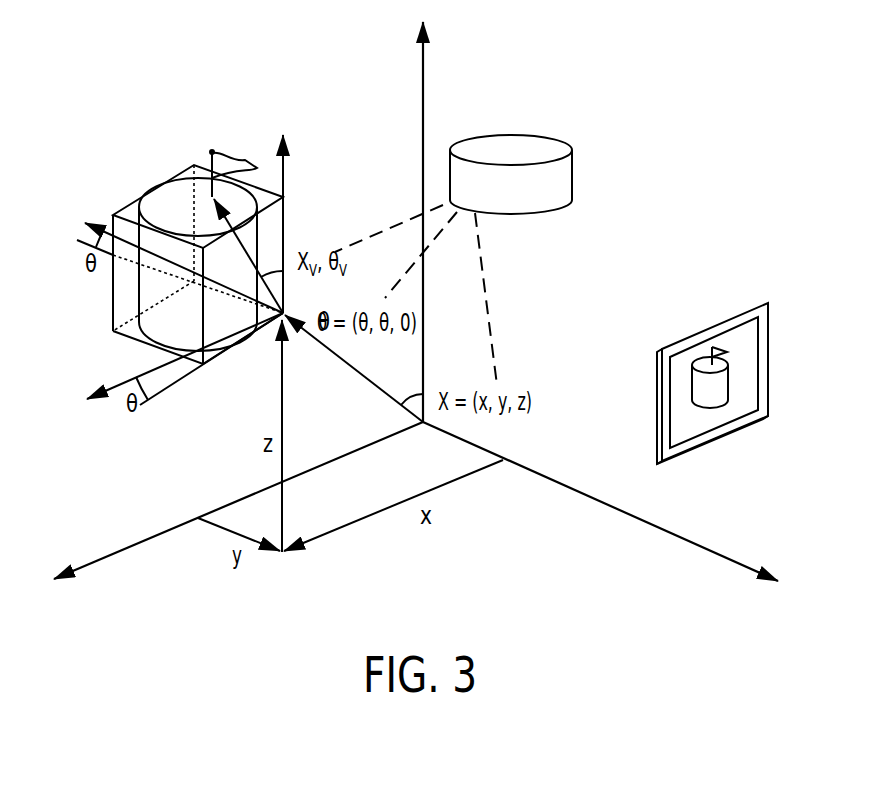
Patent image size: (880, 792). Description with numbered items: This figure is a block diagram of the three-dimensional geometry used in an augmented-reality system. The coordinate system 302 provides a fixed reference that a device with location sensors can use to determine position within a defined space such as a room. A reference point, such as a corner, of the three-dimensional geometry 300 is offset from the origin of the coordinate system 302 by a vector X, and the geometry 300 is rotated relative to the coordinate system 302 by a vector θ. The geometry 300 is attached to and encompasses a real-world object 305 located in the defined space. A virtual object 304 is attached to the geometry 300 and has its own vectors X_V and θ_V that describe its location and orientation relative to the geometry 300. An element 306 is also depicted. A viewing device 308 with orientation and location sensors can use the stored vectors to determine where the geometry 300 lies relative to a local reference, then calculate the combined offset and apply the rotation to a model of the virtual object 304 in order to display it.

The three-dimensional geometry 300 is at (113, 320).
The coordinate system 302 is at (572, 487).
The virtual object 304 is at (232, 157).
The real-world object 305 is at (157, 200).
The sensor 306 is at (513, 146).
The viewing device 308 is at (737, 312).